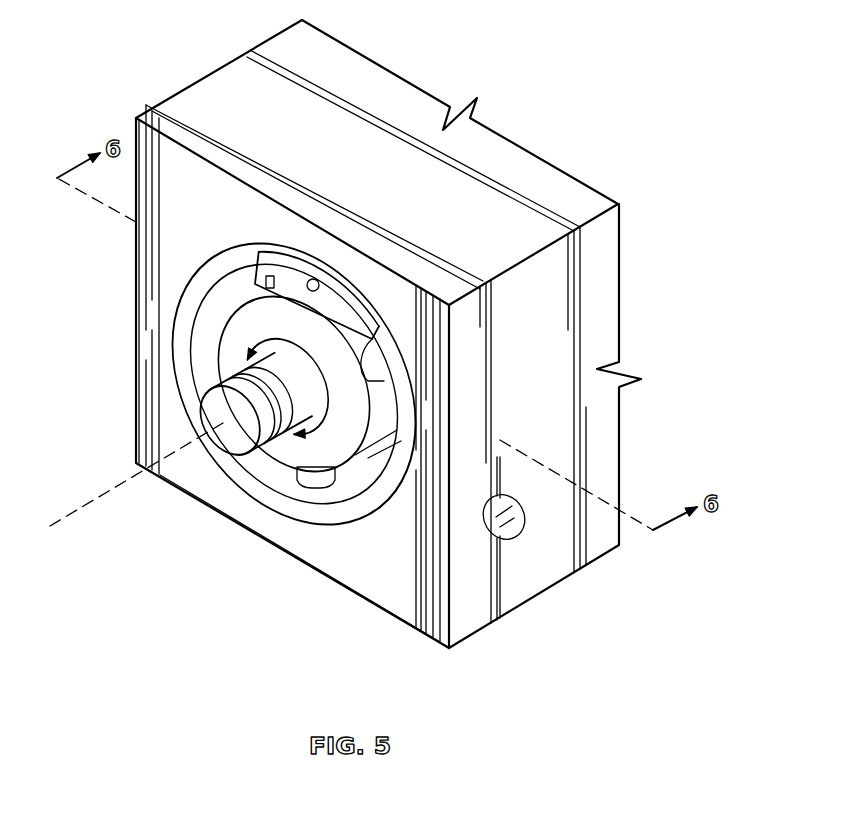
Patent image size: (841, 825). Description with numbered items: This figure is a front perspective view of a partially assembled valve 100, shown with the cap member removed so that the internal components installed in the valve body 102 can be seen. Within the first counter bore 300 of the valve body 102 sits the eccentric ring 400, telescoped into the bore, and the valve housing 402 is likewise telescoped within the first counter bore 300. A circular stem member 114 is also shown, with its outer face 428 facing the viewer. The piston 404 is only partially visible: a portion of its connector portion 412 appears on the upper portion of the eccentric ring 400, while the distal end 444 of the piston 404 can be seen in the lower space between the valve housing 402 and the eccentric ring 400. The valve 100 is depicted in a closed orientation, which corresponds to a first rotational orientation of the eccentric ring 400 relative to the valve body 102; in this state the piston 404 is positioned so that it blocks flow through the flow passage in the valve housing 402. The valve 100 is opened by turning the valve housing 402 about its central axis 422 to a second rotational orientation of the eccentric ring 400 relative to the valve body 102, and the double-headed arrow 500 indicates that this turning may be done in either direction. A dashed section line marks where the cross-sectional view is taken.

The valve 100 is at (172, 36).
The valve body 102 is at (213, 108).
The circular stem member 114 is at (208, 372).
The first counter bore 300 is at (182, 302).
The eccentric ring 400 is at (227, 258).
The valve housing 402 is at (355, 472).
The piston 404 is at (253, 280).
The connector portion 412 is at (270, 262).
The central axis 422 is at (83, 506).
The outer face 428 is at (213, 417).
The distal end 444 is at (312, 483).
The double-headed arrow 500 is at (320, 388).